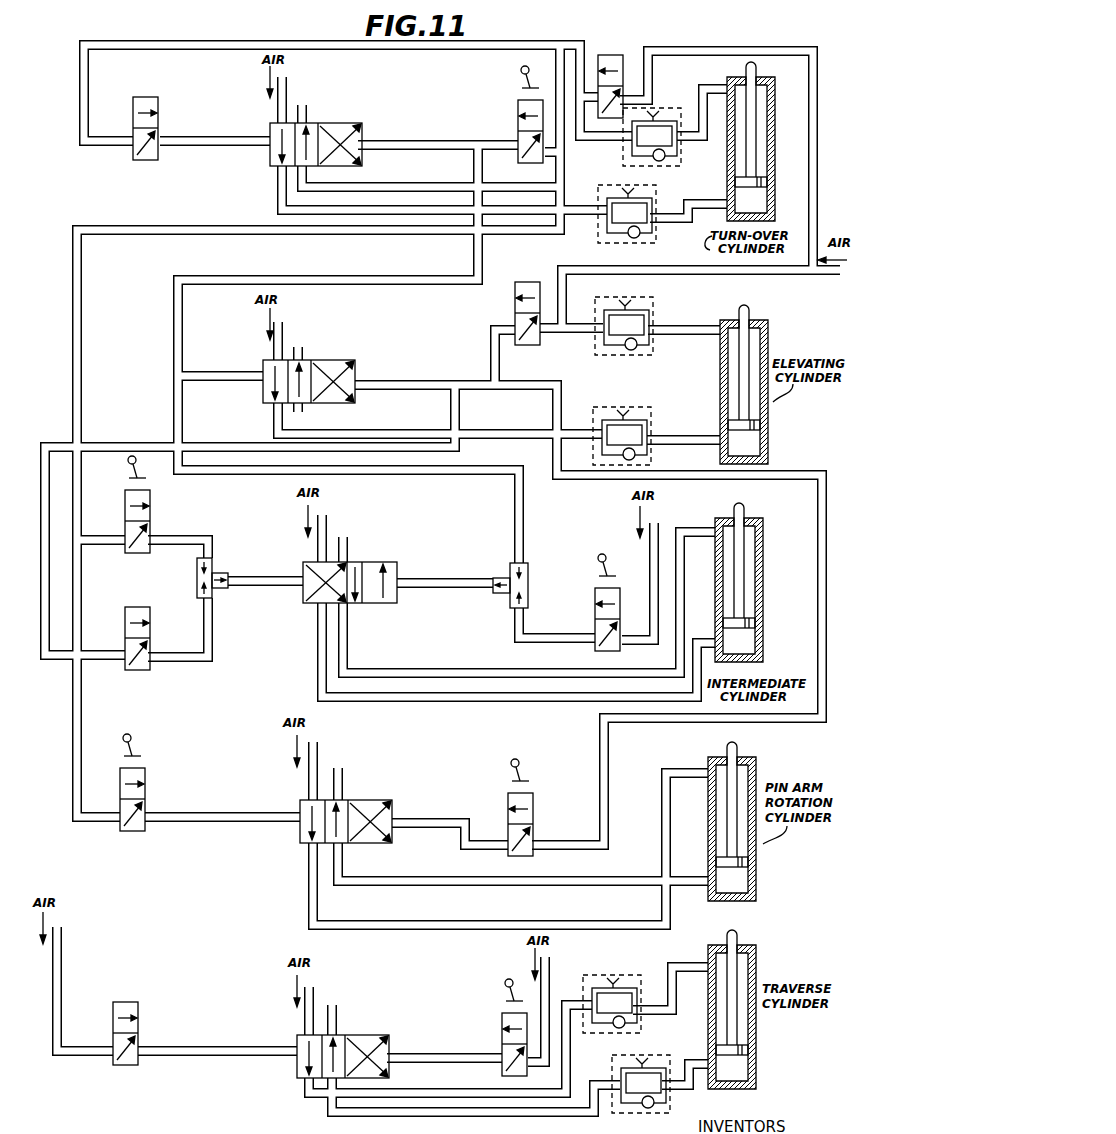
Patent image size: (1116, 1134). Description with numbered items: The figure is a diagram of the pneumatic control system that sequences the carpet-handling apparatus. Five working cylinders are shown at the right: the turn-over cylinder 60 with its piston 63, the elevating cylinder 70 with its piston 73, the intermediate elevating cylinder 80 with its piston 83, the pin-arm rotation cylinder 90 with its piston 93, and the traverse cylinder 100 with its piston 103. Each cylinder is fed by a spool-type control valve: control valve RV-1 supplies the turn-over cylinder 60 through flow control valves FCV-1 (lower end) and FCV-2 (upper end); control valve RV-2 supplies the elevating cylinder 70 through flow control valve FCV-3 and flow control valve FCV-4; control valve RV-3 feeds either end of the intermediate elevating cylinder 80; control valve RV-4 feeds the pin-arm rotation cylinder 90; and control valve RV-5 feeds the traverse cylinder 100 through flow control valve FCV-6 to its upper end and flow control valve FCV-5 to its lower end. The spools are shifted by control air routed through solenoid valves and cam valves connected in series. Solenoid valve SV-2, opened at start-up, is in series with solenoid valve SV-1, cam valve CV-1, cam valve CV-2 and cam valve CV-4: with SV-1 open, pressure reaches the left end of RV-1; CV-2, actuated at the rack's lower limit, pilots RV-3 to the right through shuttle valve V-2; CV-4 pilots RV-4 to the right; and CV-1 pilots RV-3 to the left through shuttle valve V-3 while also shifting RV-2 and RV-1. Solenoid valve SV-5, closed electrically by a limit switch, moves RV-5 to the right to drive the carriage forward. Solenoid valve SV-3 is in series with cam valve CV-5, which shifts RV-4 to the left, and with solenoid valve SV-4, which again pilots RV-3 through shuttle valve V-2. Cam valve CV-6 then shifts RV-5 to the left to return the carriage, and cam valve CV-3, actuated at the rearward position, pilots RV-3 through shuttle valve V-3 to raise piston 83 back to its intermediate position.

The turn-over cylinder 60 is at (775, 158).
The piston of turn-over cylinder 63 is at (756, 72).
The elevating cylinder 70 is at (768, 437).
The piston of elevating cylinder 73 is at (754, 314).
The intermediate elevating cylinder 80 is at (766, 566).
The piston of intermediate elevating cylinder 83 is at (747, 511).
The pin-arm rotation cylinder 90 is at (757, 880).
The piston of pin-arm rotation cylinder 93 is at (742, 750).
The traverse cylinder 100 is at (757, 1042).
The piston of traverse cylinder 103 is at (738, 937).
The solenoid pneumatic valve SV-1 is at (147, 97).
The solenoid pneumatic valve SV-2 is at (608, 54).
The solenoid valve SV-3 is at (532, 282).
The solenoid valve SV-4 is at (128, 672).
The solenoid valve SV-5 is at (127, 1001).
The cam valve CV-1 is at (518, 110).
The cam valve CV-2 is at (153, 566).
The cam valve CV-3 is at (596, 602).
The cam valve CV-4 is at (122, 836).
The cam valve CV-5 is at (500, 796).
The cam valve CV-6 is at (500, 1015).
The control valve RV-1 is at (372, 104).
The control valve RV-2 is at (366, 344).
The control valve RV-3 is at (410, 544).
The control valve RV-4 is at (405, 786).
The control valve RV-5 is at (402, 1019).
The flow-control valve FCV-1 is at (597, 241).
The flow control valve FCV-2 is at (624, 163).
The flow control valve FCV-3 is at (601, 394).
The flow control valve FCV-4 is at (598, 285).
The flow control valve FCV-5 is at (615, 1044).
The flow control valve FCV-6 is at (581, 957).
The shuttle valve V-2 is at (216, 566).
The shuttle valve V-3 is at (502, 579).